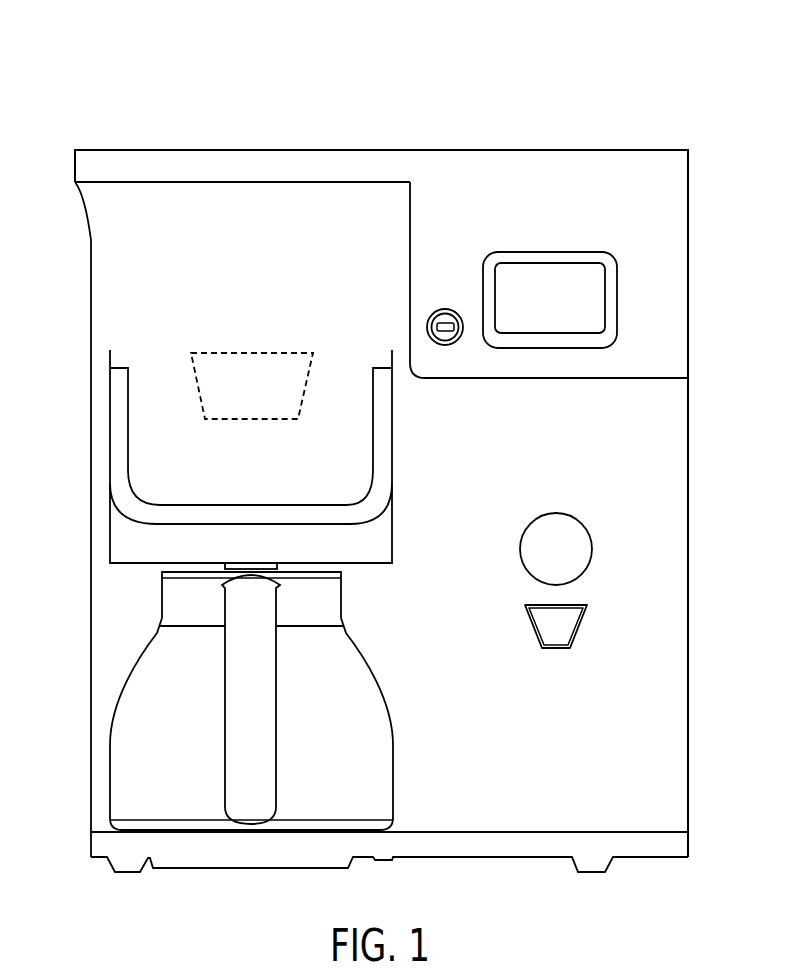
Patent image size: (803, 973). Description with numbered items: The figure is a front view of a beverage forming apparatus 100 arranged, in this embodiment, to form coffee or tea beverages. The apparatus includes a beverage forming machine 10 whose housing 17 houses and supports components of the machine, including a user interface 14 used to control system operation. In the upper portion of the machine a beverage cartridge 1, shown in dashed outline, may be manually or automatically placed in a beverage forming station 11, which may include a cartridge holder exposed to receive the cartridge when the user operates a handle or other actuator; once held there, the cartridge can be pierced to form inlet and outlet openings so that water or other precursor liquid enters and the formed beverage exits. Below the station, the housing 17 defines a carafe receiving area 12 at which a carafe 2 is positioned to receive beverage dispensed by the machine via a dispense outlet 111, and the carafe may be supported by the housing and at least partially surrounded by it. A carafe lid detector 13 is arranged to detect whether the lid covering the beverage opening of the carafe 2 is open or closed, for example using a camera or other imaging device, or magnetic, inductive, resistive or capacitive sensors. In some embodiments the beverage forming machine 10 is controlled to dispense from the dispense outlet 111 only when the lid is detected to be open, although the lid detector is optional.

The beverage forming apparatus 100 is at (406, 450).
The beverage forming machine 10 is at (667, 223).
The beverage forming station 11 is at (149, 315).
The beverage cartridge 1 is at (252, 375).
The carafe lid detector 13 is at (158, 552).
The dispense outlet 111 is at (228, 567).
The carafe 2 is at (160, 690).
The carafe receiving area 12 is at (148, 830).
The user interface 14 is at (558, 318).
The housing 17 is at (690, 633).